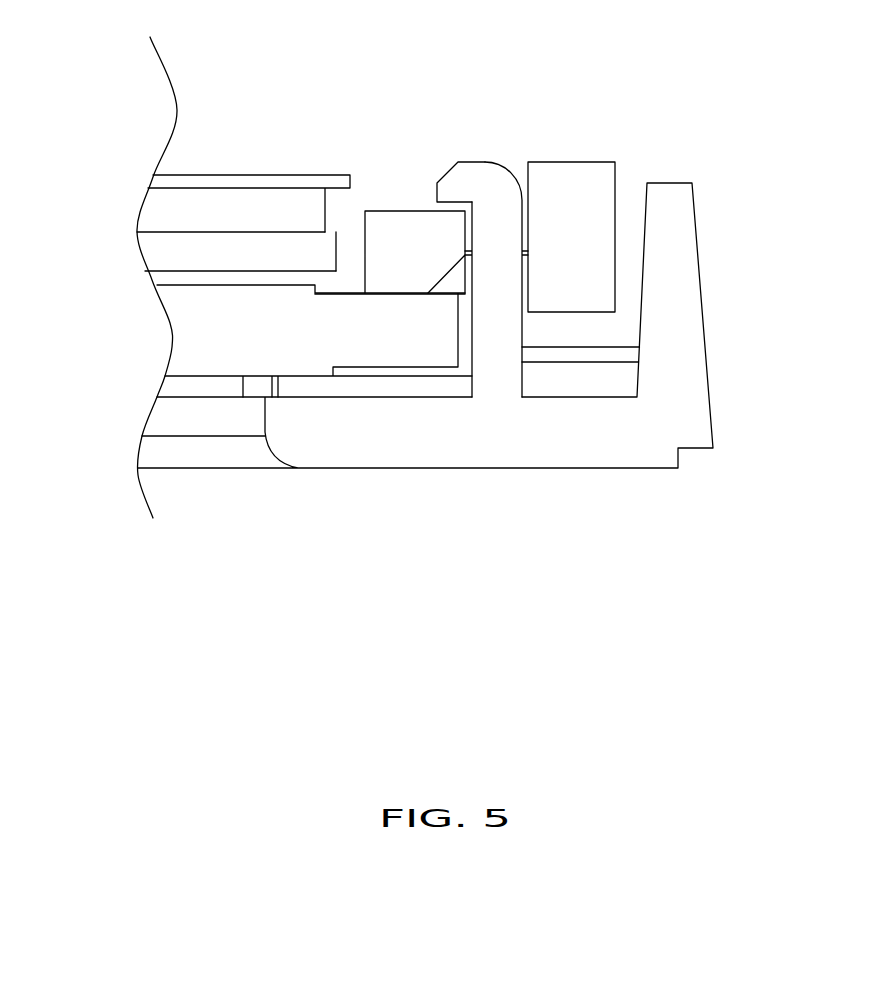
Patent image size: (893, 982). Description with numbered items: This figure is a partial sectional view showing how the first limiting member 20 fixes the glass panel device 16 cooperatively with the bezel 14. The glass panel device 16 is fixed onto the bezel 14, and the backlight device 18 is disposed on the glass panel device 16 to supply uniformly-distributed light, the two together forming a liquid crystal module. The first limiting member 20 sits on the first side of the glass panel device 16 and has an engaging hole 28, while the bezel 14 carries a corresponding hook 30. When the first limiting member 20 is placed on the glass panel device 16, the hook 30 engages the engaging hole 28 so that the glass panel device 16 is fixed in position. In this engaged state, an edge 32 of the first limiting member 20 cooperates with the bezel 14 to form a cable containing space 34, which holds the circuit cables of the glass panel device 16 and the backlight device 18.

The bezel 14 is at (634, 441).
The glass panel device 16 is at (191, 329).
The backlight device 18 is at (155, 214).
The first limiting member 20 is at (588, 150).
The engaging hole 28 is at (521, 149).
The hook 30 is at (467, 187).
The edge 32 is at (568, 312).
The cable containing space 34 is at (633, 328).